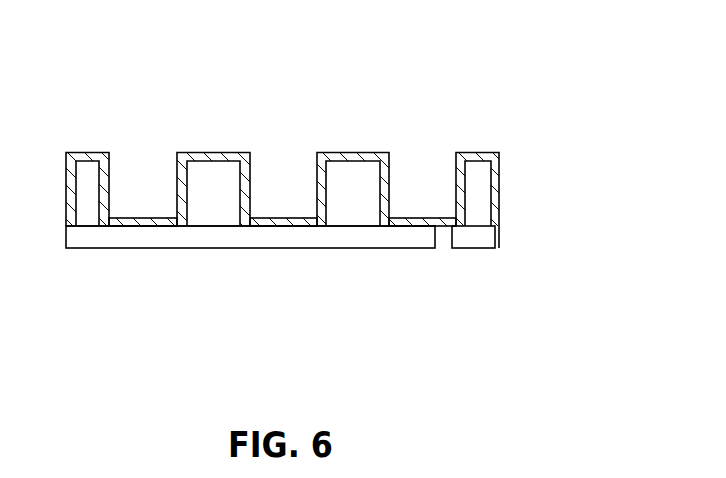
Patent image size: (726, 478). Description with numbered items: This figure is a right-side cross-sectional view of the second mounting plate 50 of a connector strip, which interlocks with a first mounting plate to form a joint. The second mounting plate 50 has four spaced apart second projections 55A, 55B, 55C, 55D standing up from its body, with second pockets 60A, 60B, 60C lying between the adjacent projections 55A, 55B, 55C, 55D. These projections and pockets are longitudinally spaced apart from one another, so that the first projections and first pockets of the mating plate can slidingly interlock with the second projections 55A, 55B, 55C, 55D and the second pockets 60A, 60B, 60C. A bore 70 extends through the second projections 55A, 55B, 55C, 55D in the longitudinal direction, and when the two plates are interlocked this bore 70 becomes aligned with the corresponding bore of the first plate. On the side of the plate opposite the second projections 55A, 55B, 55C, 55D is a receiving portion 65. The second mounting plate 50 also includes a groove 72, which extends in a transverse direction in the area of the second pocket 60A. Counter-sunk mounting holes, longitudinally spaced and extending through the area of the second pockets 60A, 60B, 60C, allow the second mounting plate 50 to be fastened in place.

The second mounting plate 50 is at (250, 220).
The second projection 55A is at (462, 152).
The second projection 55B is at (327, 152).
The second projection 55C is at (190, 155).
The second projection 55D is at (82, 155).
The second pocket 60A is at (440, 212).
The second pocket 60B is at (292, 214).
The second pocket 60C is at (165, 214).
The receiving portion 65 is at (115, 240).
The bore 70 is at (500, 183).
The groove 72 is at (443, 242).